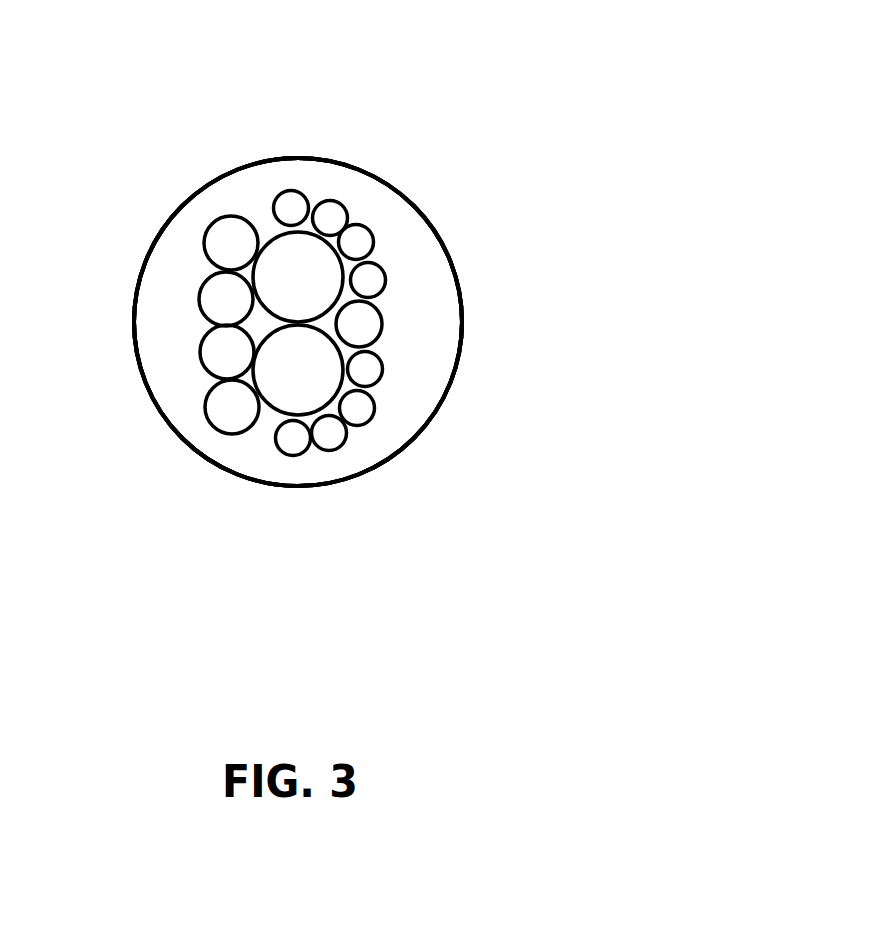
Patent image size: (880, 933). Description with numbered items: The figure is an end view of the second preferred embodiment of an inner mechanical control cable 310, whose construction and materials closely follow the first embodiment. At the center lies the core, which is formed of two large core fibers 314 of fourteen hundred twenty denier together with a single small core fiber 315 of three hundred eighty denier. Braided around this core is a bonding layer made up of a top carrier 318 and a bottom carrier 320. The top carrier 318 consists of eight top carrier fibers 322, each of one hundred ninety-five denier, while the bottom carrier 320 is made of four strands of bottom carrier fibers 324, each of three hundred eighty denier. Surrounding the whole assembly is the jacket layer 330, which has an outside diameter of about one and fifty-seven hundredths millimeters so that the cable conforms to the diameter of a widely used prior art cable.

The inner mechanical control cable 310 is at (470, 99).
The large core fiber 314 is at (323, 288).
The small core fiber 315 is at (382, 323).
The top carrier 318 is at (227, 447).
The bottom carrier 320 is at (282, 463).
The top carrier fiber 322 is at (297, 192).
The bottom carrier fiber 324 is at (208, 229).
The jacket layer 330 is at (260, 190).